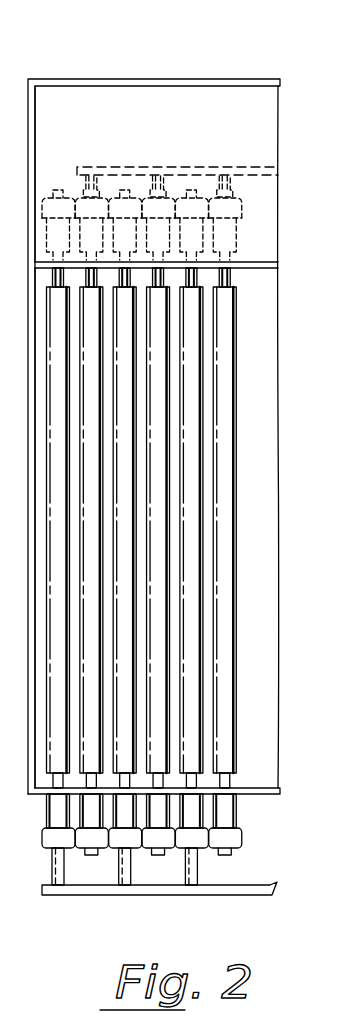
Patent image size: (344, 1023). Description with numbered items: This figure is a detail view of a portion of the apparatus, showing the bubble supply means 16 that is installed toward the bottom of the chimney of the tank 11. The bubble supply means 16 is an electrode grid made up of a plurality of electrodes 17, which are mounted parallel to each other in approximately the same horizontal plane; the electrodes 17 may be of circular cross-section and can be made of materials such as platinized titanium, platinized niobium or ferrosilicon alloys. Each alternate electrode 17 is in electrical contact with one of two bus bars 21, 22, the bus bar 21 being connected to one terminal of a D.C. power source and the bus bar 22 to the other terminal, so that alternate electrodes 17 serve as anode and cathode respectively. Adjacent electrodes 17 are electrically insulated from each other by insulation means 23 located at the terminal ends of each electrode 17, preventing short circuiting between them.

The tank 11 is at (186, 78).
The bubble supply means 16 is at (236, 530).
The electrodes 17 is at (237, 424).
The bus bar 21 is at (228, 166).
The bus bar 22 is at (276, 881).
The insulation means 23 is at (238, 228).